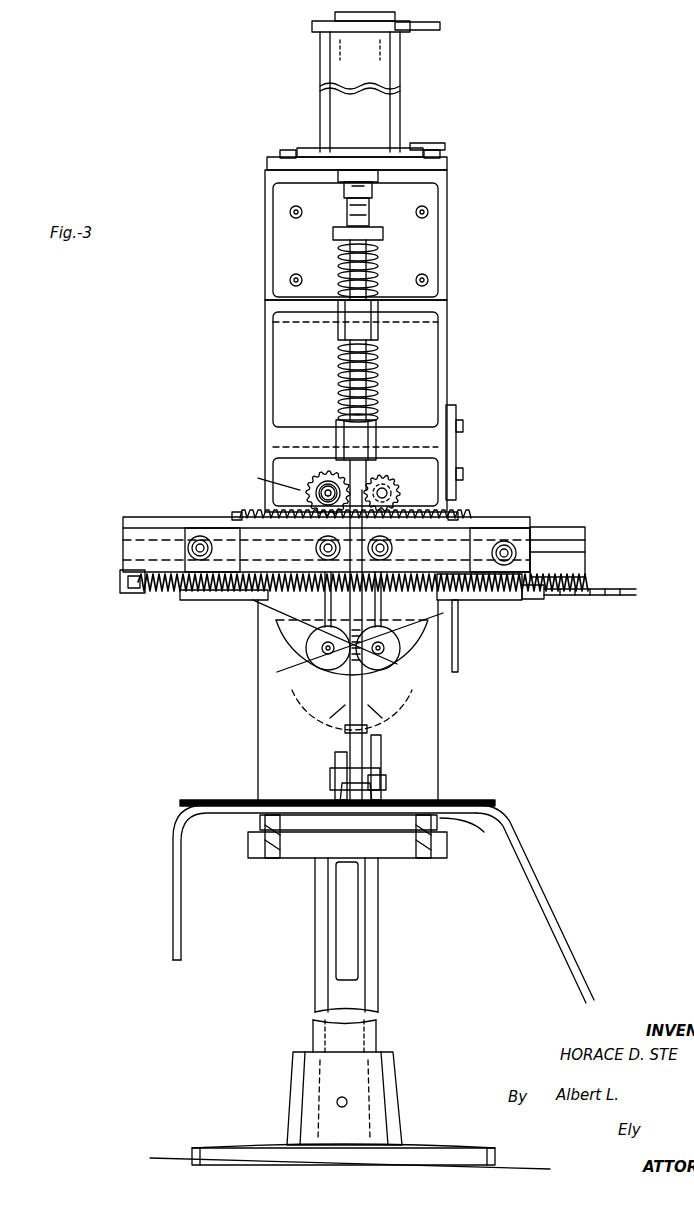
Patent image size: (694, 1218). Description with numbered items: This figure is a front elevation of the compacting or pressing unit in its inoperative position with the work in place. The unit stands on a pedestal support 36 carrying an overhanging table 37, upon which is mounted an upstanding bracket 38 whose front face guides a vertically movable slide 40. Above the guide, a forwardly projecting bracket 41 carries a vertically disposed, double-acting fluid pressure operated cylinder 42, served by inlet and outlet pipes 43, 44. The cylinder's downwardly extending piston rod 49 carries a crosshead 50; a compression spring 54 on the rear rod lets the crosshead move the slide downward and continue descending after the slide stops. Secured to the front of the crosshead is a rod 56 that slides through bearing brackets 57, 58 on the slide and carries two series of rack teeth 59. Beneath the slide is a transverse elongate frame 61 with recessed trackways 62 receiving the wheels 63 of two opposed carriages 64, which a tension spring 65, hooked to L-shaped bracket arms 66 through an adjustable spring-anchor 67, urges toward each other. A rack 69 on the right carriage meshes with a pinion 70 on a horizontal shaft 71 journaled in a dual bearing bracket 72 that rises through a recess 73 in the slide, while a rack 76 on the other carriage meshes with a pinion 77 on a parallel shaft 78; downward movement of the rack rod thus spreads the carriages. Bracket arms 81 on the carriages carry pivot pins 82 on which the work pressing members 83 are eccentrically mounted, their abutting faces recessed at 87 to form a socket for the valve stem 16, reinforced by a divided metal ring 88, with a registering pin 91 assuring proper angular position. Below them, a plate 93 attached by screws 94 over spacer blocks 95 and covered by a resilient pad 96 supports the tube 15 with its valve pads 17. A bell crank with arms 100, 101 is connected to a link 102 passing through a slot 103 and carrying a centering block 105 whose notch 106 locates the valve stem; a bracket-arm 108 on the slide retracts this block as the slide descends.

The tube 15 is at (556, 918).
The valve stem 16 is at (345, 786).
The valve pads 17 is at (315, 802).
The pedestal support 36 is at (372, 960).
The overhanging table 37 is at (440, 860).
The upstanding bracket 38 is at (268, 696).
The slide 40 is at (432, 341).
The forwardly projecting bracket 41 is at (432, 251).
The fluid pressure operated cylinder 42 is at (326, 70).
The inlet and outlet pipe 43 is at (432, 147).
The inlet and outlet pipe 44 is at (420, 31).
The piston rod 49 is at (345, 193).
The crosshead 50 is at (334, 233).
The compression spring 54 is at (345, 368).
The rod 56 is at (350, 266).
The bearing bracket 57 is at (380, 332).
The bearing bracket 58 is at (374, 440).
The rack teeth 59 is at (345, 406).
The elongate frame 61 is at (570, 526).
The recessed trackways 62 is at (566, 548).
The wheels 63 is at (180, 526).
The carriages 64 is at (222, 534).
The tension spring 65 is at (300, 600).
The L-shaped bracket arms 66 is at (146, 596).
The adjustable spring-anchor 67 is at (638, 592).
The rack 69 is at (456, 514).
The pinion 70 is at (400, 496).
The horizontal shaft 71 is at (388, 492).
The dual bearing bracket 72 is at (328, 488).
The recess 73 is at (292, 510).
The rack 76 is at (237, 512).
The pinion 77 is at (318, 489).
The horizontal shaft 78 is at (270, 475).
The bracket arms 81 is at (268, 622).
The pivot pins 82 is at (322, 648).
The work pressing members 83 is at (290, 702).
The radial recesses 87 is at (322, 712).
The divided metal ring 88 is at (386, 712).
The registering pin 91 is at (372, 672).
The plate 93 is at (222, 828).
The screws 94 is at (273, 860).
The spacer blocks 95 is at (440, 816).
The pad 96 is at (488, 830).
The bell crank arm 100 is at (352, 730).
The bell crank arm 101 is at (460, 662).
The link 102 is at (386, 784).
The slot 103 is at (382, 750).
The centering block 105 is at (331, 773).
The notch 106 is at (338, 760).
The bracket-arm 108 is at (462, 425).